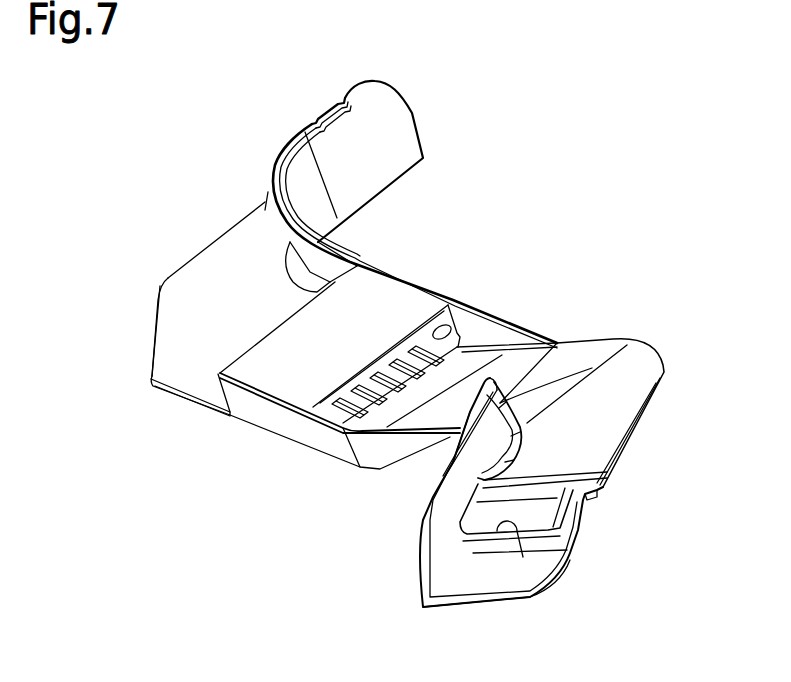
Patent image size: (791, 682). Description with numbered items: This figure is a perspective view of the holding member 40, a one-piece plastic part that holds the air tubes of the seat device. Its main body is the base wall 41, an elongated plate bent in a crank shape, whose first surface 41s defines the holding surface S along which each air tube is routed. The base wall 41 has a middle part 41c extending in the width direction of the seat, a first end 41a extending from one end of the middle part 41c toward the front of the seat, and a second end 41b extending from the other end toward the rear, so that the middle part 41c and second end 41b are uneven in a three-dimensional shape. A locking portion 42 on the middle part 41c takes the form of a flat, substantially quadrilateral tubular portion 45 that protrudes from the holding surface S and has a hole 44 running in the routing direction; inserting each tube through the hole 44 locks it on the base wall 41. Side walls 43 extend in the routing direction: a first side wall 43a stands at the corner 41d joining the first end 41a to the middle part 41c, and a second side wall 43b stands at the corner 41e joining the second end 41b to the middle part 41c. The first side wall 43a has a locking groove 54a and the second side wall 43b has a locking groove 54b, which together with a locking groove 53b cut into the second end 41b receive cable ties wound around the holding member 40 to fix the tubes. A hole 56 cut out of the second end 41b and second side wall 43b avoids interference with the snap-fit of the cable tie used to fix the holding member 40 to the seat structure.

The holding member 40 is at (92, 122).
The base wall 41 is at (353, 305).
The first end 41a is at (266, 197).
The second end 41b is at (490, 582).
The middle part 41c is at (209, 392).
The corner 41d is at (162, 323).
The corner 41e is at (616, 340).
The first surface 41s is at (229, 298).
The holding surface S is at (226, 289).
The locking portion 42 is at (136, 377).
The tubular portion 45 is at (218, 373).
The side walls 43 is at (456, 369).
The first side wall 43a is at (390, 186).
The second side wall 43b is at (466, 517).
The hole 44 is at (453, 304).
The locking groove 53b is at (590, 496).
The locking groove 54a is at (343, 98).
The locking groove 54b is at (442, 466).
The hole 56 is at (553, 585).